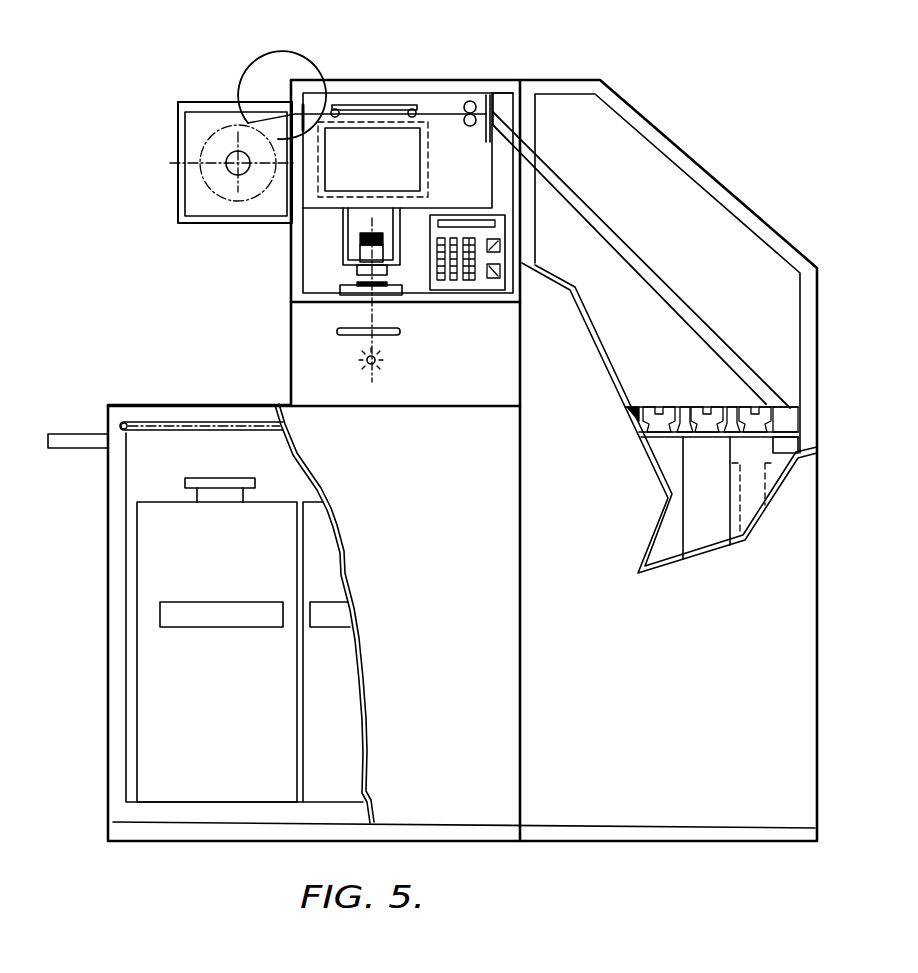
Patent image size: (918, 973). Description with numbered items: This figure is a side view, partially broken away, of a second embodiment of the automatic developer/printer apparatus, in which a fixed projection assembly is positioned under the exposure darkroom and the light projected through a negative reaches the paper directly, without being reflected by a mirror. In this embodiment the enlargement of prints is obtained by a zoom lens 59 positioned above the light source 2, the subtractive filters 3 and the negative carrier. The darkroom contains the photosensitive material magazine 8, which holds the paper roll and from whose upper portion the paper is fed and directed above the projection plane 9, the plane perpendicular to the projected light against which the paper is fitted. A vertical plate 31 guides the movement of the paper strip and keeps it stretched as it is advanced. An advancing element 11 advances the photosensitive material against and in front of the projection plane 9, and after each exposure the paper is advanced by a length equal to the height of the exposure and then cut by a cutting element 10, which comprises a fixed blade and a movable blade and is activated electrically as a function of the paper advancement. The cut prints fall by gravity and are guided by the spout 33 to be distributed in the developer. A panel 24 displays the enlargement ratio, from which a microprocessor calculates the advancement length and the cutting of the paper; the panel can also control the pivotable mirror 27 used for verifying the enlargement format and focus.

The light source 2 is at (367, 362).
The subtractive filters 3 is at (337, 333).
The magazine 8 is at (180, 128).
The projection plane 9 is at (398, 118).
The cutting element 10 is at (463, 105).
The advancing element 11 is at (482, 100).
The panel 24 is at (498, 232).
The pivotable mirror 27 is at (320, 133).
The vertical plate 31 is at (355, 107).
The spout 33 is at (700, 336).
The zoom lens 59 is at (370, 255).